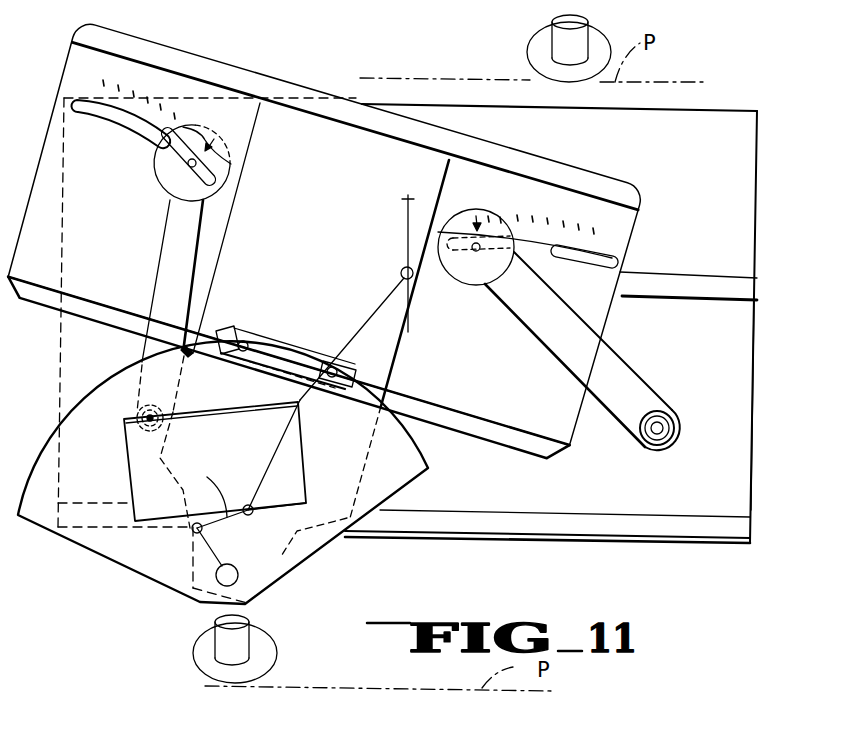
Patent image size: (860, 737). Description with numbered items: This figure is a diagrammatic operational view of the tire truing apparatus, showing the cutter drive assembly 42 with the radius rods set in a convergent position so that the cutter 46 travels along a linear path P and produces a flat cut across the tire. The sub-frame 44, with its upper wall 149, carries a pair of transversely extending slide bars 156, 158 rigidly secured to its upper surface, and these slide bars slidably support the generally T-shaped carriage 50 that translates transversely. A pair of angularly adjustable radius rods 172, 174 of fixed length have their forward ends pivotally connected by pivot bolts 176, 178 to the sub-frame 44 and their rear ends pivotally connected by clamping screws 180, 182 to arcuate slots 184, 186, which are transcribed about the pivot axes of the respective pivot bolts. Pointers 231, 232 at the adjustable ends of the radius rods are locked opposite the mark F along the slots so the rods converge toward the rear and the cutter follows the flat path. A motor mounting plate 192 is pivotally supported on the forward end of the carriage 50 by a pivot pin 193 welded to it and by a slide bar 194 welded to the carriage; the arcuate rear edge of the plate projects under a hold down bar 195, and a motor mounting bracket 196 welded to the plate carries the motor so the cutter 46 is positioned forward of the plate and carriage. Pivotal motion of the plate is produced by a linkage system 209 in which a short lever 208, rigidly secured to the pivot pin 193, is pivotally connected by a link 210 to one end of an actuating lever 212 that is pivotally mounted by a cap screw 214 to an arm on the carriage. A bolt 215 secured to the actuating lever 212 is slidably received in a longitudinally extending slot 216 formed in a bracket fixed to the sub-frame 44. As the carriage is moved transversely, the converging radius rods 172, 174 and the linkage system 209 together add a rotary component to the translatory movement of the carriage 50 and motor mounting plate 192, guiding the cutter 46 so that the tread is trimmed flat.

The support plate 42 is at (148, 30).
The sub-frame 44 is at (757, 358).
The cutter 46 is at (527, 43).
The carriage 50 is at (287, 108).
The upper wall 149 is at (742, 323).
The slide bar 156 is at (746, 518).
The slide bar 158 is at (750, 289).
The radius rod 172 is at (168, 220).
The radius rod 174 is at (600, 353).
The pivot bolt 176 is at (132, 410).
The pivot bolt 178 is at (647, 441).
The clamping screw 180 is at (160, 163).
The clamping screw 182 is at (440, 244).
The arcuate slot 184 is at (110, 110).
The arcuate slot 186 is at (573, 250).
The motor mounting plate 192 is at (100, 542).
The pivot pin 193 is at (232, 572).
The slide bar 194 is at (357, 372).
The hold down bar 195 is at (265, 322).
The motor mounting bracket 196 is at (133, 465).
The short lever 208 is at (200, 540).
The linkage system 209 is at (311, 397).
The link 210 is at (202, 485).
The actuating lever 212 is at (390, 295).
The cap screw 214 is at (260, 455).
The bolt 215 is at (414, 275).
The slot 216 is at (402, 328).
The pointer 231 is at (205, 148).
The pointer 232 is at (470, 224).